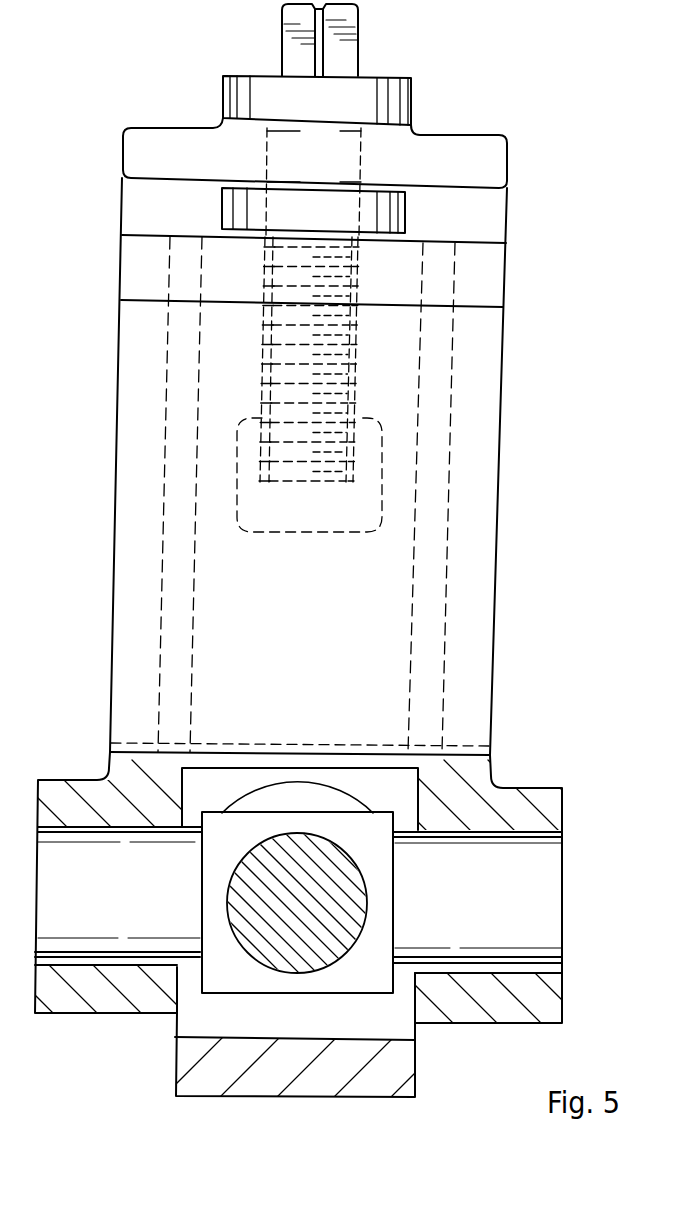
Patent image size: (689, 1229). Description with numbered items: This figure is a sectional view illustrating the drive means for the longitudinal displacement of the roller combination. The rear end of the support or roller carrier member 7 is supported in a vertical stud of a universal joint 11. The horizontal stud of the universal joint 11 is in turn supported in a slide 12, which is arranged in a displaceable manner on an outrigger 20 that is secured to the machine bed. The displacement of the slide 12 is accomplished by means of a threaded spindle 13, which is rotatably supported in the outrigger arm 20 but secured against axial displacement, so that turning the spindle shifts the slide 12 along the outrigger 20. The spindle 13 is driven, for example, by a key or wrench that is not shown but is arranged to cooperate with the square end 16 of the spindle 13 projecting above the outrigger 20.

The roller carrier member 7 is at (365, 1073).
The universal joint 11 is at (375, 862).
The slide 12 is at (375, 627).
The threaded spindle 13 is at (333, 276).
The square end 16 is at (360, 45).
The outrigger 20 is at (490, 162).